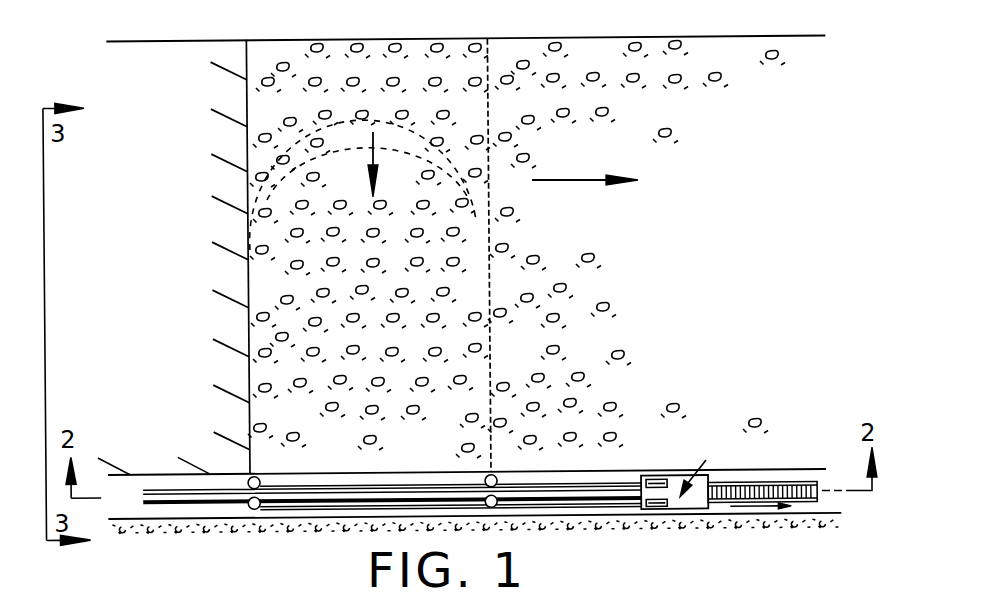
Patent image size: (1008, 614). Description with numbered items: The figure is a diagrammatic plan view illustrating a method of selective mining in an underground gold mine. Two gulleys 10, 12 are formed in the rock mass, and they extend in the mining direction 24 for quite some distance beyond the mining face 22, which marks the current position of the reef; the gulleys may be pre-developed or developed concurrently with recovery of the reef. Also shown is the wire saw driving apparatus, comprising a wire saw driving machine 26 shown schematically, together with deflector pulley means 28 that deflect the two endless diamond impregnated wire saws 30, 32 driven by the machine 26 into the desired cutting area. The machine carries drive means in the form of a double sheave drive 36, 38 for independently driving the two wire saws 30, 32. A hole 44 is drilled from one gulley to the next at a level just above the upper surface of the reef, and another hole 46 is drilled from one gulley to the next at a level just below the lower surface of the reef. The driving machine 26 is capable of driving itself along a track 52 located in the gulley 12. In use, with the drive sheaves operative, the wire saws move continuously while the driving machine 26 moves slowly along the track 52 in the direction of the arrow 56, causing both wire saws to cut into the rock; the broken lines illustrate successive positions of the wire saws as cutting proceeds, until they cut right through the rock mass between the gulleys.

The gulley 10 is at (548, 27).
The gulley 12 is at (110, 508).
The mining face 22 is at (248, 370).
The mining direction 24 is at (592, 178).
The wire saw driving machine 26 is at (692, 477).
The deflector pulley means 28 is at (262, 481).
The wire saw 30 is at (362, 476).
The wire saw 32 is at (312, 506).
The double sheave drive 36 is at (655, 479).
The double sheave drive 38 is at (654, 505).
The hole 44 is at (492, 365).
The hole 46 is at (372, 39).
The track 52 is at (772, 490).
The arrow 56 is at (772, 522).